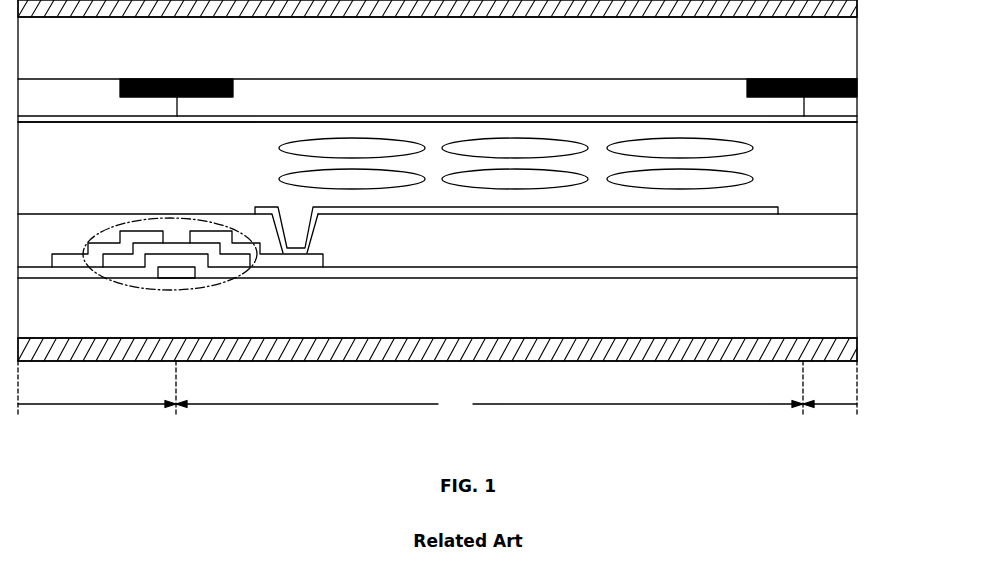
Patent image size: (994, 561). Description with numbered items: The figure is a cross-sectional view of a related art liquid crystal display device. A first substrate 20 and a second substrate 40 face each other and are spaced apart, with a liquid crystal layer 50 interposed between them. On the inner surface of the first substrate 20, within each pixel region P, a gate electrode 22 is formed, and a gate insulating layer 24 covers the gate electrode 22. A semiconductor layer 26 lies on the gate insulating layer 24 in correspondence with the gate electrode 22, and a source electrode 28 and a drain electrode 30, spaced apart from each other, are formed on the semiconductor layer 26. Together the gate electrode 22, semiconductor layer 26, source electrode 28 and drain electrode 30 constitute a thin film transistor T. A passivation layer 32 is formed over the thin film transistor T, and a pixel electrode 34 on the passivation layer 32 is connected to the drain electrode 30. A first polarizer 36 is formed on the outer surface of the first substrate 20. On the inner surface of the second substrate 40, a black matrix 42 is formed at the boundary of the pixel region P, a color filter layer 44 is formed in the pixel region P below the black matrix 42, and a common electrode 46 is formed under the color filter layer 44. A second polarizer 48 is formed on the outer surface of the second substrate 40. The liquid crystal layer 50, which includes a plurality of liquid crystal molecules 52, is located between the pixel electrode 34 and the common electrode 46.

The first substrate 20 is at (820, 324).
The gate electrode 22 is at (178, 270).
The gate insulating layer 24 is at (221, 268).
The semiconductor layer 26 is at (139, 252).
The source electrode 28 is at (64, 258).
The drain electrode 30 is at (268, 256).
The passivation layer 32 is at (380, 245).
The pixel electrode 34 is at (455, 210).
The first polarizer 36 is at (848, 348).
The second substrate 40 is at (812, 69).
The black matrix 42 is at (177, 78).
The color filter layer 44 is at (363, 92).
The common electrode 46 is at (473, 118).
The second polarizer 48 is at (848, 12).
The liquid crystal layer 50 is at (848, 150).
The liquid crystal molecules 52 is at (752, 180).
The thin film transistor T is at (127, 289).
The pixel region P is at (437, 388).